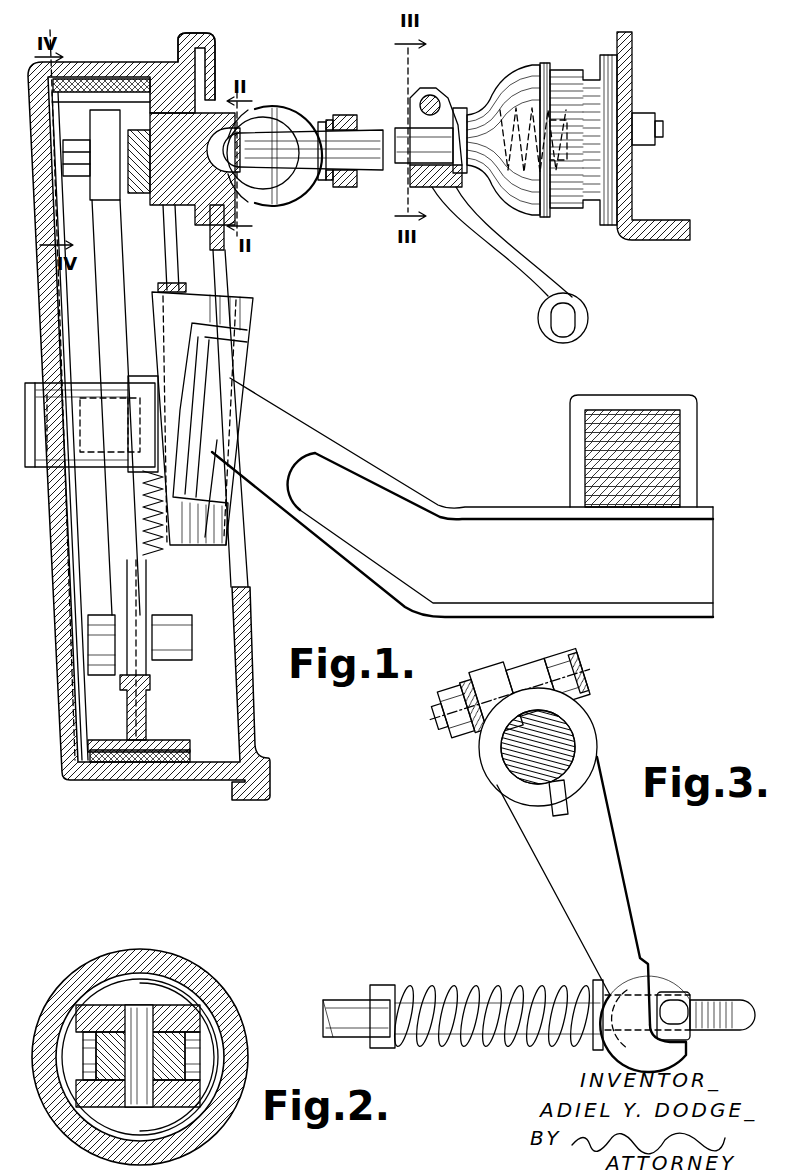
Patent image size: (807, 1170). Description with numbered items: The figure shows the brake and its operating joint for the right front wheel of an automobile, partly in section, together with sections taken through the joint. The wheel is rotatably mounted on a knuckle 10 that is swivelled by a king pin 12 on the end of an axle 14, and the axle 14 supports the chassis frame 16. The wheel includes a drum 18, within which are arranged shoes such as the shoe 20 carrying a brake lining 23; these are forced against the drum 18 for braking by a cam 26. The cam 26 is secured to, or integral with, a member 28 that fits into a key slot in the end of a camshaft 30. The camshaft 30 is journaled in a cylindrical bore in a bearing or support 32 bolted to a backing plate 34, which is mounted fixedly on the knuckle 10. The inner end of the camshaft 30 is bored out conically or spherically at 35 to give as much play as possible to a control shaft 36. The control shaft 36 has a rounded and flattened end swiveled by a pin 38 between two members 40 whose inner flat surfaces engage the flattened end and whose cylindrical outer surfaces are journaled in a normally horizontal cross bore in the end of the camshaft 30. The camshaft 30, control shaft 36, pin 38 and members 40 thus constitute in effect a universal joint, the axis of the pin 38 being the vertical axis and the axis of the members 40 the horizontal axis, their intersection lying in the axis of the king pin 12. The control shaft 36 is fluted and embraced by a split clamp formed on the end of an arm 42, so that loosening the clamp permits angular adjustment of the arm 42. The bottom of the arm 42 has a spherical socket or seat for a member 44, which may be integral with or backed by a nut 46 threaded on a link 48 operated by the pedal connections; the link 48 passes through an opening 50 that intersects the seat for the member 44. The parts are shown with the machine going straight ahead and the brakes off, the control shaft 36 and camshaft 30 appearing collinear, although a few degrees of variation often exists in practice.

In FIG. 1, the knuckle 10 is at (263, 316).
In FIG. 1, the king pin 12 is at (247, 376).
In FIG. 1, the axle 14 is at (370, 505).
In FIG. 1, the chassis frame 16 is at (638, 422).
In FIG. 1, the drum 18 is at (160, 770).
In FIG. 1, the shoe 20 is at (82, 98).
In FIG. 1, the brake lining 23 is at (75, 82).
In FIG. 1, the cam 26 is at (105, 191).
In FIG. 1, the member 28 is at (137, 158).
In FIG. 1, the camshaft 30 is at (182, 180).
In FIG. 2, the camshaft 30 is at (156, 960).
In FIG. 1, the bearing or support 32 is at (213, 100).
In FIG. 1, the backing plate 34 is at (219, 244).
In FIG. 1, the conical or spherical bore 35 is at (252, 130).
In FIG. 1, the control shaft 36 is at (372, 140).
In FIG. 2, the control shaft 36 is at (176, 1050).
In FIG. 3, the control shaft 36 is at (528, 755).
In FIG. 1, the pin 38 is at (264, 112).
In FIG. 2, the pin 38 is at (142, 1020).
In FIG. 1, the members 40 is at (300, 195).
In FIG. 2, the members 40 is at (152, 990).
In FIG. 1, the arm 42 is at (477, 223).
In FIG. 3, the arm 42 is at (571, 866).
In FIG. 3, the member 44 is at (662, 988).
In FIG. 3, the nut 46 is at (700, 1012).
In FIG. 3, the link 48 is at (344, 1006).
In FIG. 1, the opening 50 is at (578, 298).